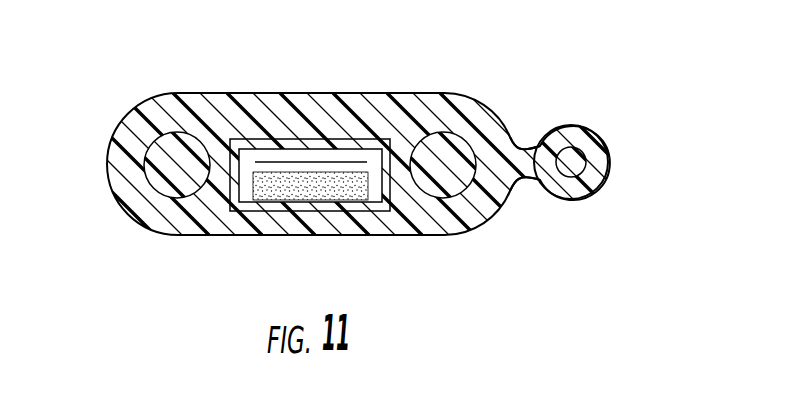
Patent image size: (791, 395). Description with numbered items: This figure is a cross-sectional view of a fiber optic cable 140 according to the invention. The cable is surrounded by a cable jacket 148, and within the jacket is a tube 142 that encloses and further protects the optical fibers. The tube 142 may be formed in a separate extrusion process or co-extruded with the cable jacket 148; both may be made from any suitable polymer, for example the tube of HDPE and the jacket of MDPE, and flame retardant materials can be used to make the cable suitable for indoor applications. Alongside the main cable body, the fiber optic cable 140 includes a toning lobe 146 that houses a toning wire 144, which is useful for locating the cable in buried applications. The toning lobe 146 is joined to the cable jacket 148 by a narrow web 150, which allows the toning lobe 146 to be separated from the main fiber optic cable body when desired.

The fiber optic cable 140 is at (395, 151).
The tube 142 is at (397, 212).
The toning wire 144 is at (572, 148).
The toning lobe 146 is at (395, 137).
The cable jacket 148 is at (318, 117).
The web 150 is at (521, 171).